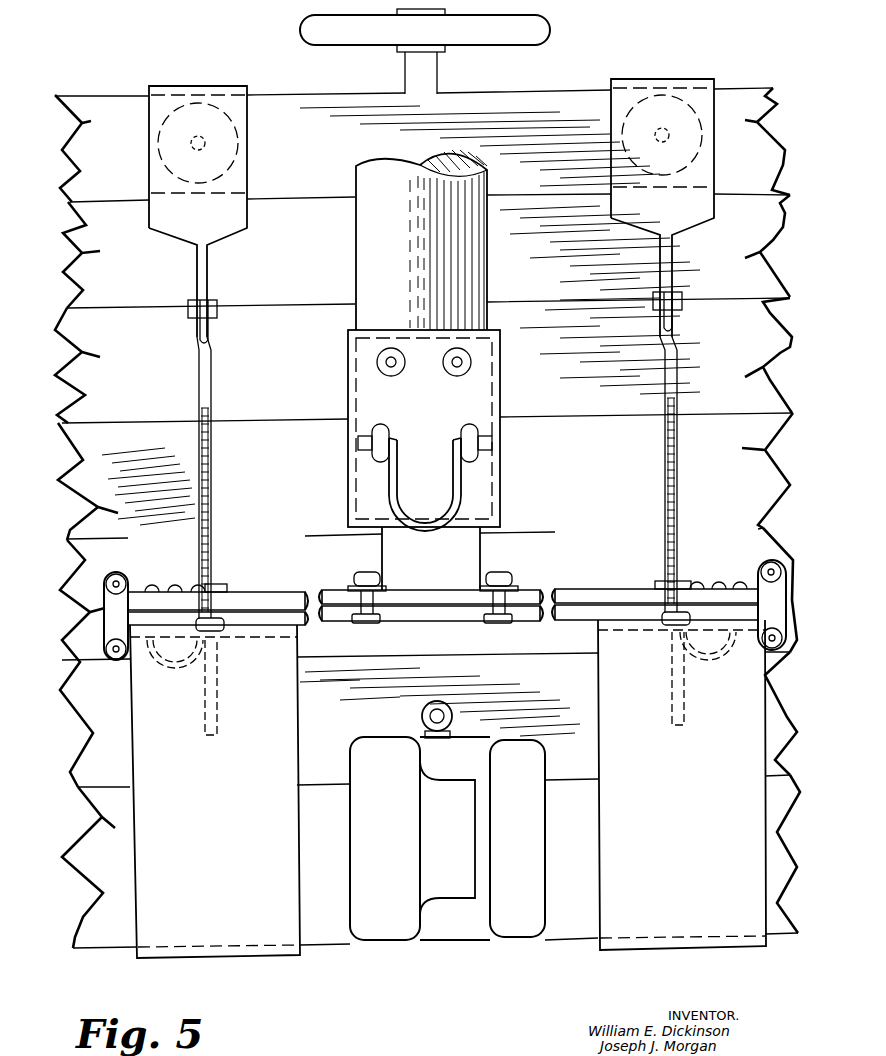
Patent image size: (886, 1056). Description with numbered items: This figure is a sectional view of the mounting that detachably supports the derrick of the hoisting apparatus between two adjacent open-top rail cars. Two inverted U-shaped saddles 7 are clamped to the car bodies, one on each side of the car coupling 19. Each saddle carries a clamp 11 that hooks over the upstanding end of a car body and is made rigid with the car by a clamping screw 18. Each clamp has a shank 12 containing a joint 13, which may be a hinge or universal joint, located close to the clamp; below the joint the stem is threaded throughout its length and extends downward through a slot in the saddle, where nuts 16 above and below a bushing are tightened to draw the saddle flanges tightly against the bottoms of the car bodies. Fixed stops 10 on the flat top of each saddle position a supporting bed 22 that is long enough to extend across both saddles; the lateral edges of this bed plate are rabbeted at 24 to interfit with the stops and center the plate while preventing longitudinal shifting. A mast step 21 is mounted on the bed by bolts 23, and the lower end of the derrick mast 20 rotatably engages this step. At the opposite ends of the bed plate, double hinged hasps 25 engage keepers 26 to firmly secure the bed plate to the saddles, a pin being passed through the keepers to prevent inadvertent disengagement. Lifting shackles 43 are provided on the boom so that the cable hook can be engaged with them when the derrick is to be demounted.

The saddle 7 is at (448, 789).
The stop 10 is at (270, 630).
The clamp 11 is at (212, 85).
The shank 12 is at (212, 378).
The joint 13 is at (214, 290).
The nut 16 is at (205, 652).
The clamping screw 18 is at (238, 151).
The car coupling 19 is at (398, 936).
The mast 20 is at (474, 262).
The mast step 21 is at (458, 552).
The supporting bed 22 is at (330, 590).
The bolt 23 is at (360, 574).
The rabbeted edge 24 is at (604, 598).
The double hinged hasp 25 is at (170, 588).
The keeper 26 is at (172, 672).
The lifting shackle 43 is at (395, 470).